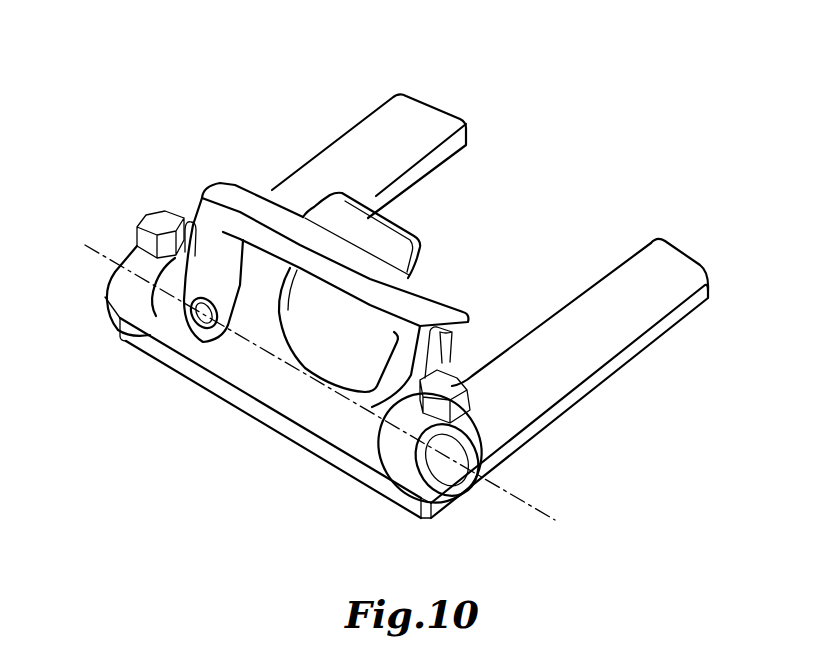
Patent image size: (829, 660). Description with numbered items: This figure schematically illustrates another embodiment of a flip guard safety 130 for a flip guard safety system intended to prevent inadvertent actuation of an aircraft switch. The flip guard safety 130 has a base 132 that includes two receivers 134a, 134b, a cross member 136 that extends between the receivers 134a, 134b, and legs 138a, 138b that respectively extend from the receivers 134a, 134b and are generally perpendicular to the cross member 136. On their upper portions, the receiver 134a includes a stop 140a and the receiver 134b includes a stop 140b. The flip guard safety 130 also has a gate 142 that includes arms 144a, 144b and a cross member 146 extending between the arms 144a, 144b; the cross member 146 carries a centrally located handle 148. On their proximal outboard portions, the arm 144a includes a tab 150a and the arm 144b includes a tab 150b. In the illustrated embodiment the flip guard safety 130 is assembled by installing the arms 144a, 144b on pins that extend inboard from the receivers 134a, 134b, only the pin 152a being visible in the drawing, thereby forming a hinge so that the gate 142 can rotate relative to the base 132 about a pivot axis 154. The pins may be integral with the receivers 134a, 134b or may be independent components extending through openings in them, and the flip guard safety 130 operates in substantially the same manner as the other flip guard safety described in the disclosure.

The flip guard safety 130 is at (584, 151).
The base 132 is at (612, 305).
The receiver 134a is at (123, 283).
The receiver 134b is at (406, 470).
The cross member 136 is at (273, 420).
The leg 138a is at (425, 115).
The leg 138b is at (670, 262).
The stop 140a is at (157, 213).
The stop 140b is at (460, 397).
The gate 142 is at (418, 293).
The arm 144a is at (160, 327).
The arm 144b is at (340, 440).
The cross member 146 is at (243, 193).
The handle 148 is at (398, 237).
The tab 150a is at (193, 222).
The tab 150b is at (450, 366).
The pin 152a is at (217, 330).
The pivot axis 154 is at (553, 519).